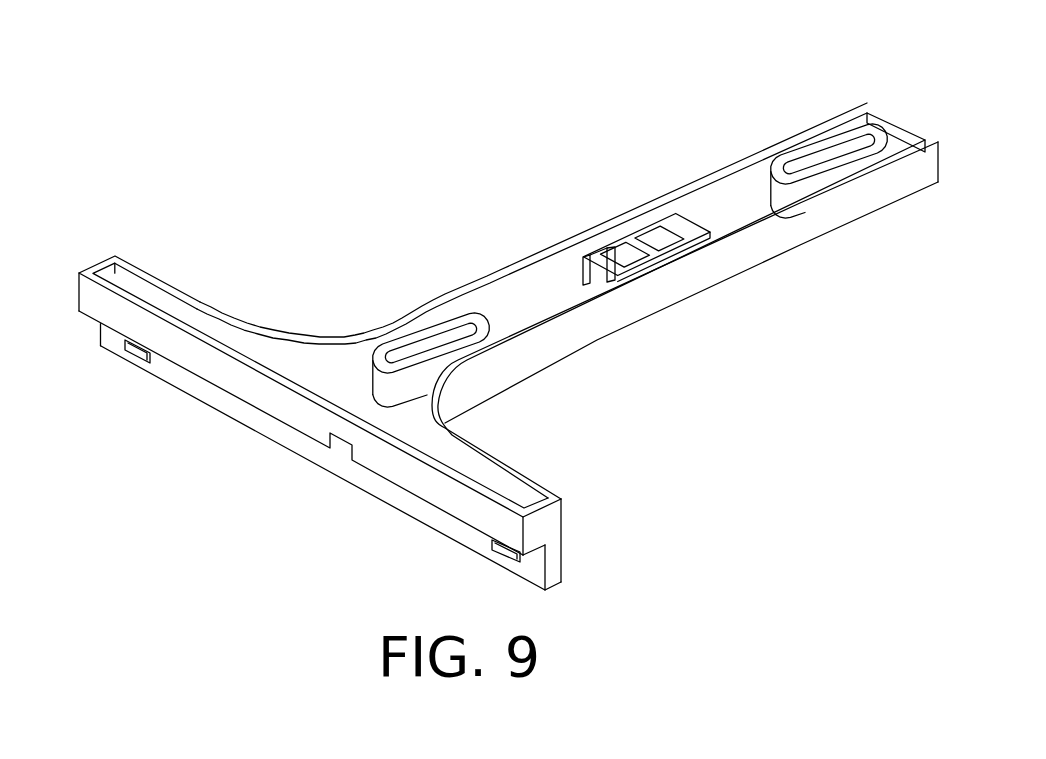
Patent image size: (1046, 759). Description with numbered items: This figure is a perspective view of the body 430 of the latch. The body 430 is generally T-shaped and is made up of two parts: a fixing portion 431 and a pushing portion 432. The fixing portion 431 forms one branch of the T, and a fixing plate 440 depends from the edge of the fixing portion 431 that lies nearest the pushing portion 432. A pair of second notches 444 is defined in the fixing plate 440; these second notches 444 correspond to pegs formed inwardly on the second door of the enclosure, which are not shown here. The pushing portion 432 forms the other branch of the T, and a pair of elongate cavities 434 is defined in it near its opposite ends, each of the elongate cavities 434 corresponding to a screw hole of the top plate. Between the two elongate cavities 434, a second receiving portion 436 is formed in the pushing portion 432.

The body 430 is at (727, 393).
The fixing portion 431 is at (588, 521).
The pushing portion 432 is at (584, 394).
The elongate cavities 434 is at (432, 348).
The second receiving portion 436 is at (644, 240).
The fixing plate 440 is at (367, 478).
The second notches 444 is at (136, 352).